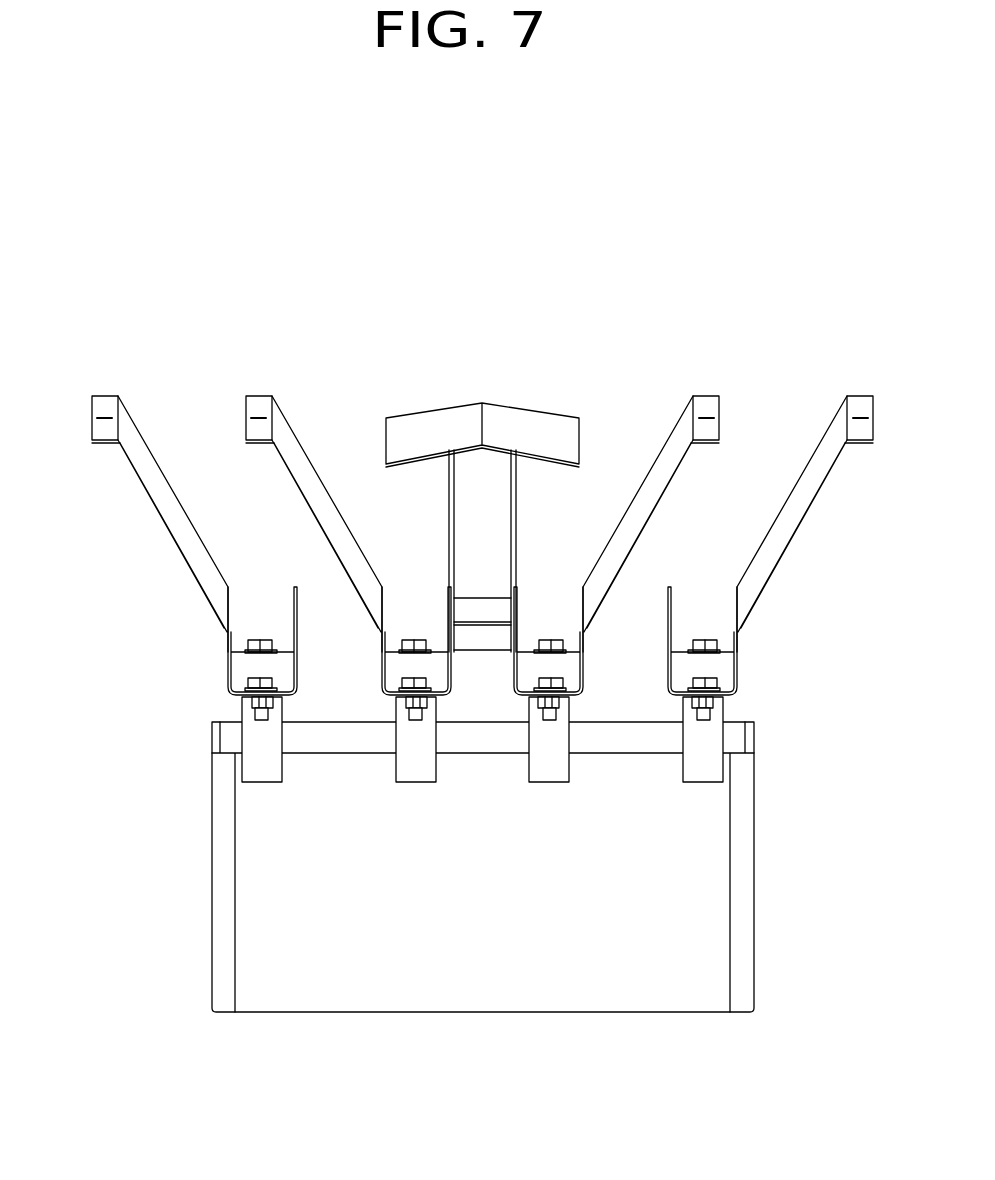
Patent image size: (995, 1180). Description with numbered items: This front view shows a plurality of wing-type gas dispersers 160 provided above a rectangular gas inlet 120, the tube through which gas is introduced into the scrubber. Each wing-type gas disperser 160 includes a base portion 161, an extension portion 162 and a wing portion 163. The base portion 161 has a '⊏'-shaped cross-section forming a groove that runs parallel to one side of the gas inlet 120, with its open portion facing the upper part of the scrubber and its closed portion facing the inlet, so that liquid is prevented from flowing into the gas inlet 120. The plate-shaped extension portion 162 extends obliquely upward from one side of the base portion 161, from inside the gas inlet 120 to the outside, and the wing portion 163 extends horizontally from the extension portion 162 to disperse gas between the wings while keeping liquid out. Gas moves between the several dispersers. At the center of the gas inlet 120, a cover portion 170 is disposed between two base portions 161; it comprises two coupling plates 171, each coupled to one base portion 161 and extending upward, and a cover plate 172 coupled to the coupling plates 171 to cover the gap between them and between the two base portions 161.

The gas inlet 120 is at (754, 814).
The wing-type gas disperser 160 is at (460, 497).
The base portion 161 is at (228, 657).
The extension portion 162 is at (157, 493).
The wing portion 163 is at (102, 400).
The cover portion 170 is at (482, 475).
The coupling plate 171 is at (450, 510).
The cover plate 172 is at (555, 430).